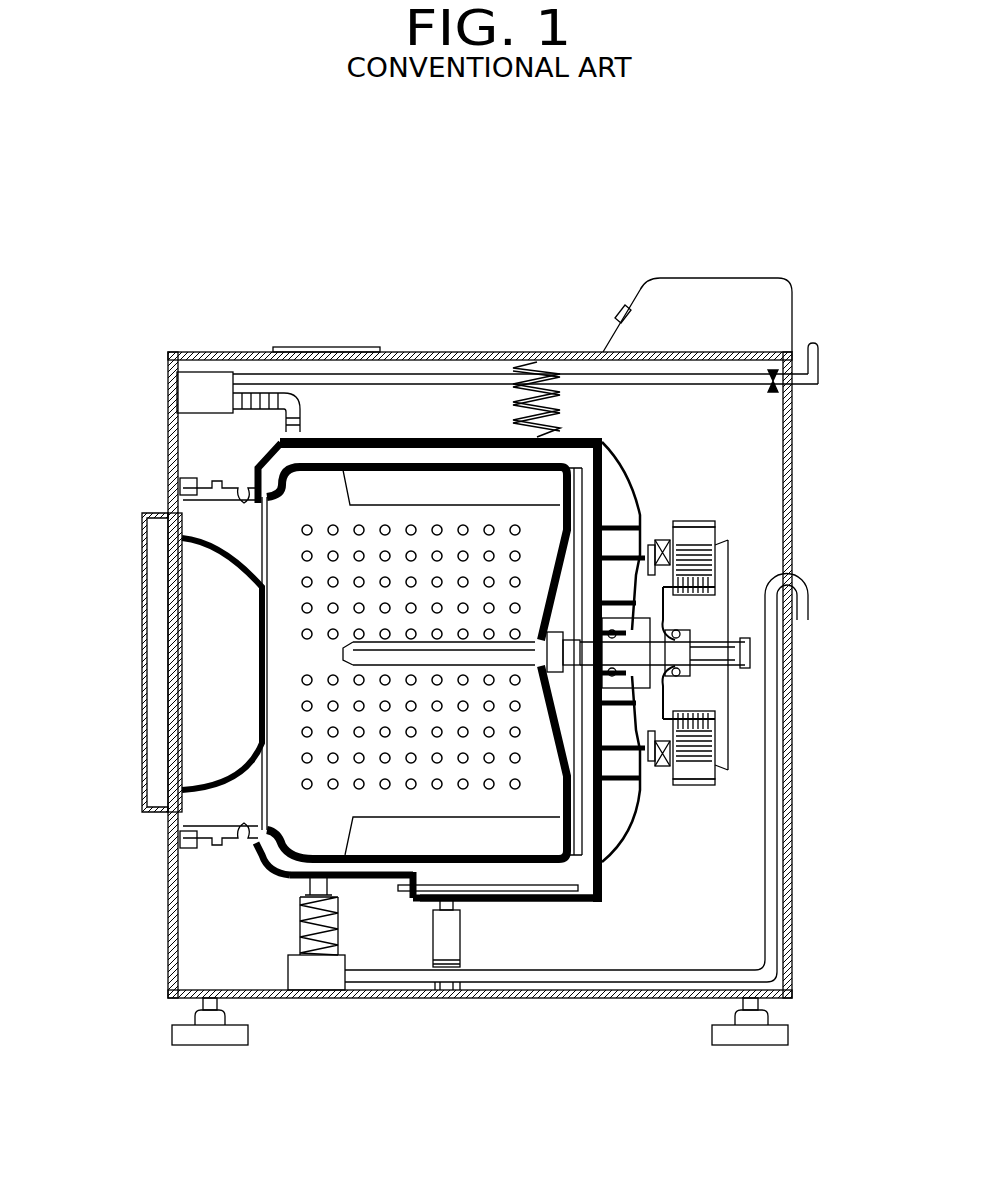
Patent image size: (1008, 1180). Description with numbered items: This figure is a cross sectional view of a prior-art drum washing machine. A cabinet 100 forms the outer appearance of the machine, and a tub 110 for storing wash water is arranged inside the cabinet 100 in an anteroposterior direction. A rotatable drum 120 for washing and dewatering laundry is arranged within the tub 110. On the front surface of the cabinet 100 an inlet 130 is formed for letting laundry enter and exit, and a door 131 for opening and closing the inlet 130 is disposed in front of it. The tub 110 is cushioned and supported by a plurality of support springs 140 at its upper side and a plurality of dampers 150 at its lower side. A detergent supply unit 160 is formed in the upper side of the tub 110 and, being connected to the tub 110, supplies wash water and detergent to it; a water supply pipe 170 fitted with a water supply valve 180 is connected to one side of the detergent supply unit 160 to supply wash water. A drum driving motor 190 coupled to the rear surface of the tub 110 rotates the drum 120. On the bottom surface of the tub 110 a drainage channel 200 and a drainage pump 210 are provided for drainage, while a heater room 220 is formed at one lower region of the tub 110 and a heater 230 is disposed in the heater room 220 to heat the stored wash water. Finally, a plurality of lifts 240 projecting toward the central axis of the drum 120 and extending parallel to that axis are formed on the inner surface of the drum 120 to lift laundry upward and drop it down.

The cabinet 100 is at (792, 455).
The tub 110 is at (360, 438).
The drum 120 is at (437, 463).
The inlet 130 is at (178, 492).
The door 131 is at (142, 680).
The support spring 140 is at (535, 395).
The damper 150 is at (455, 935).
The detergent supply unit 160 is at (206, 392).
The water supply pipe 170 is at (705, 383).
The water supply valve 180 is at (773, 370).
The drum driving motor 190 is at (715, 528).
The drainage channel 200 is at (617, 972).
The drainage pump 210 is at (316, 980).
The heater room 220 is at (575, 903).
The heater 230 is at (580, 887).
The lift 240 is at (388, 487).